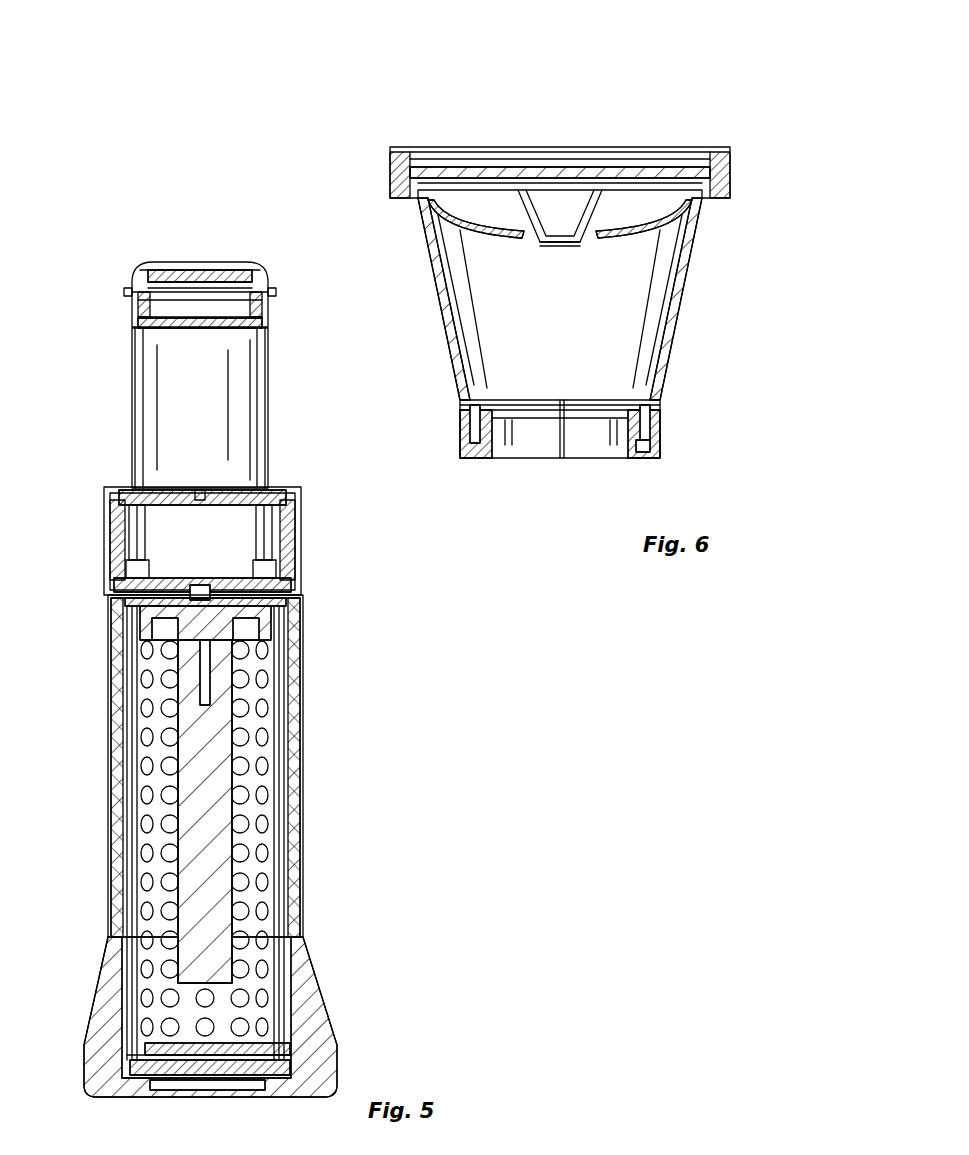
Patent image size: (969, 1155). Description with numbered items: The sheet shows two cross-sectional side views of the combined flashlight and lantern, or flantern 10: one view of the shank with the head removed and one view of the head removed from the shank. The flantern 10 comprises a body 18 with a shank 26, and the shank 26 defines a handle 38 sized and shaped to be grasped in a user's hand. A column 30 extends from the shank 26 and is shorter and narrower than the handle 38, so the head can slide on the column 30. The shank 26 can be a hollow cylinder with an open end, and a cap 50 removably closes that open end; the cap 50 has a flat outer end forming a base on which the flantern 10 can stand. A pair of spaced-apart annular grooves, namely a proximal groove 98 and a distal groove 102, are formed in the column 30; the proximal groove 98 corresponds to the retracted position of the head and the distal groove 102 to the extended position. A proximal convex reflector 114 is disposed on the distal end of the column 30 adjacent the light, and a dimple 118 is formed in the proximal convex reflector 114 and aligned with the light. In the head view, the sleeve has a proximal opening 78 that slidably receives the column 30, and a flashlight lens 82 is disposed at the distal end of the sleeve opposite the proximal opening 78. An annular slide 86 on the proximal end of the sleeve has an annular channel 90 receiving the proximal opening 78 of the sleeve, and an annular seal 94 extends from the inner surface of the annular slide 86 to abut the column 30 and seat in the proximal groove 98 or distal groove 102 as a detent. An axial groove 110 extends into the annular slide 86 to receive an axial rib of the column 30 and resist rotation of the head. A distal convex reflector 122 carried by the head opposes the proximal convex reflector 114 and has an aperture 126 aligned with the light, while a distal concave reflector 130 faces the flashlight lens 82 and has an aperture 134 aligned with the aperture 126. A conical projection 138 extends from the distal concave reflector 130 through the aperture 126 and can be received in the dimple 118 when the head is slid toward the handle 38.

In FIG. 5, the flantern 10 is at (80, 962).
In FIG. 5, the body 18 is at (112, 750).
In FIG. 5, the shank 26 is at (113, 873).
In FIG. 5, the column 30 is at (192, 432).
In FIG. 5, the handle 38 is at (300, 790).
In FIG. 5, the cap 50 is at (318, 1010).
In FIG. 5, the proximal groove 98 is at (270, 437).
In FIG. 5, the distal groove 102 is at (272, 298).
In FIG. 5, the proximal convex reflector 114 is at (140, 283).
In FIG. 5, the dimple 118 is at (212, 262).
In FIG. 6, the proximal opening 78 is at (513, 460).
In FIG. 6, the flashlight lens 82 is at (620, 176).
In FIG. 6, the annular slide 86 is at (662, 418).
In FIG. 6, the annular channel 90 is at (458, 415).
In FIG. 6, the annular seal 94 is at (590, 440).
In FIG. 6, the axial groove 110 is at (557, 442).
In FIG. 6, the distal convex reflector 122 is at (458, 212).
In FIG. 6, the aperture 126 is at (533, 237).
In FIG. 6, the distal concave reflector 130 is at (541, 205).
In FIG. 6, the aperture 134 is at (560, 245).
In FIG. 6, the conical projection 138 is at (582, 240).